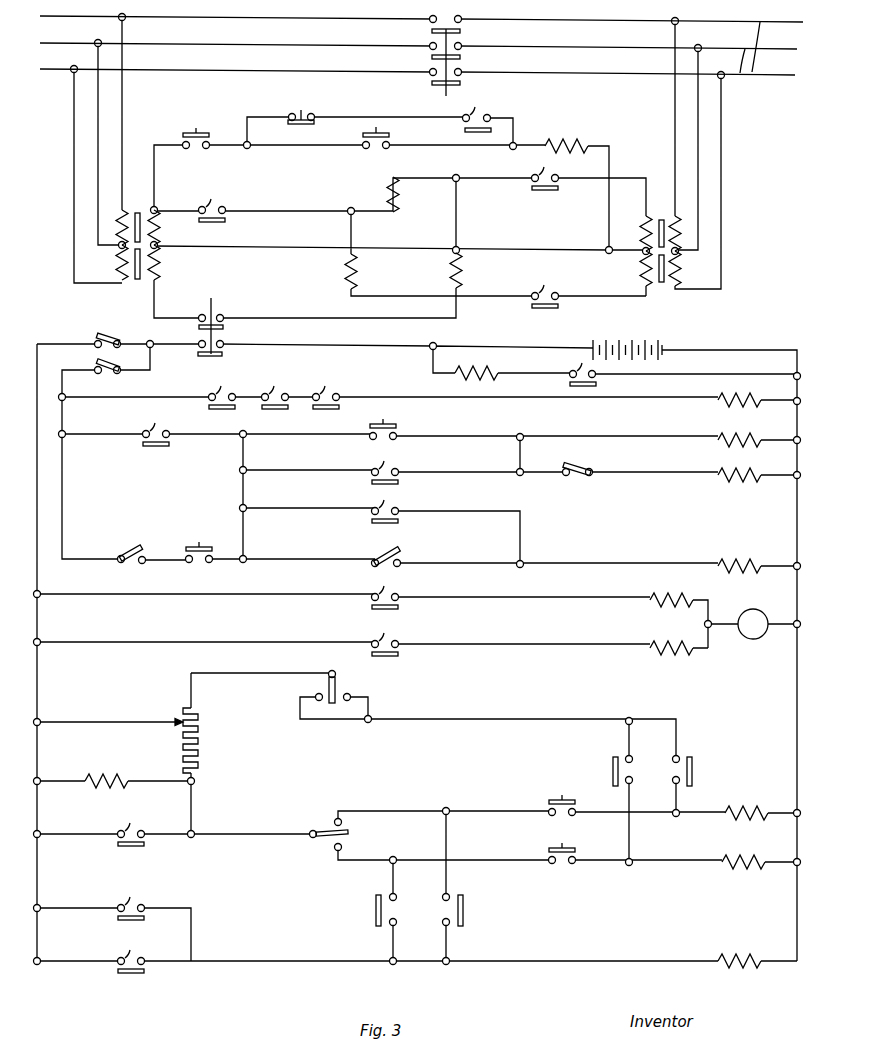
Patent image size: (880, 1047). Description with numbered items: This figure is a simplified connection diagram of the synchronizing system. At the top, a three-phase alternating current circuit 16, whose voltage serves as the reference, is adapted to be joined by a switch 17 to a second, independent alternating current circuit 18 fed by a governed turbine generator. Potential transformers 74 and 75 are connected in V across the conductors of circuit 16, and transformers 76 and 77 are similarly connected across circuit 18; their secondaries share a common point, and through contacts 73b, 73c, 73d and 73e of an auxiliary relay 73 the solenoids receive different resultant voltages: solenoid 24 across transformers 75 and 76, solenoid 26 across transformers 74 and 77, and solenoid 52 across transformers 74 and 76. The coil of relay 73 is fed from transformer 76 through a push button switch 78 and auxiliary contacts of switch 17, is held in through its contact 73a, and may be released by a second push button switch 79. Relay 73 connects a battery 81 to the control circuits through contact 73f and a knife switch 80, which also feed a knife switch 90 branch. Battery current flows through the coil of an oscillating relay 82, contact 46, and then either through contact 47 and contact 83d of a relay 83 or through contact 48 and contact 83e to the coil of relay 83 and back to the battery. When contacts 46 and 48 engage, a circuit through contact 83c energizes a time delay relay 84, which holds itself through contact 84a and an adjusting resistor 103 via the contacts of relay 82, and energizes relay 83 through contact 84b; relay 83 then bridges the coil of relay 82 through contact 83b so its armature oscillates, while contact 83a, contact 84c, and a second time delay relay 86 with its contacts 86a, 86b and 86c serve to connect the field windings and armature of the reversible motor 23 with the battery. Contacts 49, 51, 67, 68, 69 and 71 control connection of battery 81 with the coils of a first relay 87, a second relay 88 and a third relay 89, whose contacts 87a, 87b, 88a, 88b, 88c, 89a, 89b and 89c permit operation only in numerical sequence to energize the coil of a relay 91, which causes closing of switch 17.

The alternating current circuit 16 is at (746, 75).
The switch 17 is at (450, 93).
The second alternating current circuit 18 is at (40, 16).
The reversible electric motor 23 is at (660, 612).
The solenoid 24 is at (345, 272).
The solenoid 26 is at (463, 268).
The contact 46 is at (349, 836).
The contact 47 is at (334, 824).
The contact 48 is at (333, 849).
The contact 49 is at (384, 550).
The contact 51 is at (400, 565).
The solenoid 52 is at (402, 190).
The contact 67 is at (580, 465).
The contact 68 is at (564, 466).
The contact 69 is at (126, 549).
The contact 71 is at (143, 566).
The auxiliary relay 73 is at (562, 144).
The contact of relay 73 73a is at (487, 112).
The contact of relay 73 73b is at (222, 221).
The contact of relay 73 73c is at (224, 327).
The contact of relay 73 73d is at (546, 192).
The contact of relay 73 73e is at (546, 310).
The contact of relay 73 73f is at (196, 360).
The potential transformer 74 is at (661, 220).
The potential transformer 75 is at (660, 286).
The potential transformer 76 is at (138, 211).
The potential transformer 77 is at (138, 282).
The push button switch 78 is at (376, 147).
The second push button switch 79 is at (301, 106).
The knife switch 80 is at (109, 337).
The battery 81 is at (626, 338).
The oscillating relay 82 is at (336, 691).
The relay 83 is at (738, 956).
The contact of relay 83 83a is at (557, 799).
The contact of relay 83 83b is at (128, 844).
The contact of relay 83 83c is at (558, 848).
The contact of relay 83 83d is at (465, 915).
The contact of relay 83 83e is at (372, 908).
The time delay relay 84 is at (744, 858).
The contact of relay 84 84a is at (612, 771).
The contact of relay 84 84b is at (128, 918).
The contact of relay 84 84c is at (386, 608).
The time delay relay 86 is at (744, 809).
The contact of relay 86 86a is at (696, 769).
The contact of relay 86 86b is at (128, 971).
The contact of relay 86 86c is at (384, 660).
The first relay 87 is at (738, 439).
The contact of relay 87 87a is at (154, 447).
The contact of relay 87 87b is at (220, 391).
The second relay 88 is at (738, 474).
The contact of relay 88 88a is at (200, 546).
The contact of relay 88 88b is at (387, 465).
The contact of relay 88 88c is at (273, 391).
The third relay 89 is at (738, 565).
The contact of relay 89 89a is at (387, 422).
The contact of relay 89 89b is at (402, 522).
The contact of relay 89 89c is at (325, 391).
The switch 90 is at (102, 364).
The relay 91 is at (736, 400).
The adjusting resistor 103 is at (199, 749).